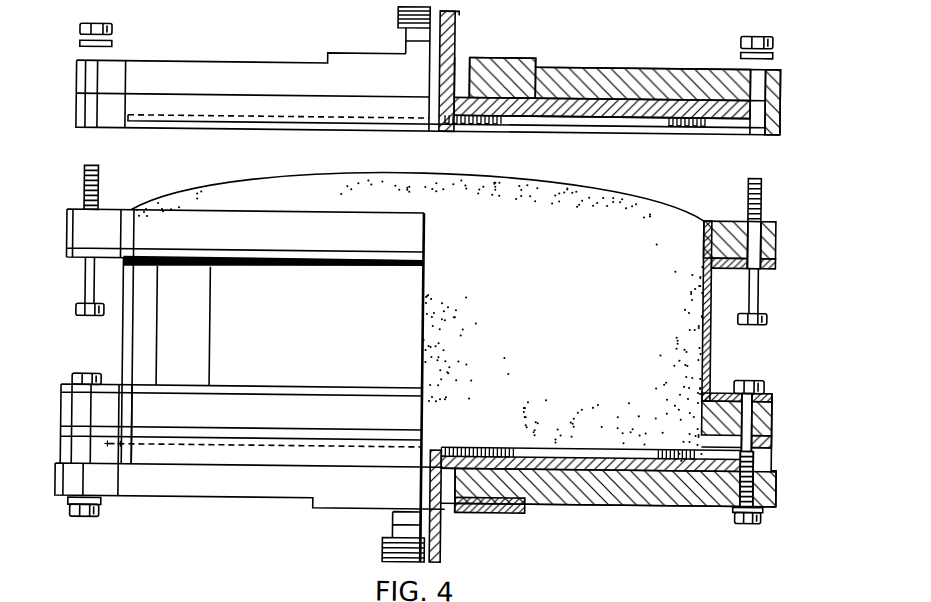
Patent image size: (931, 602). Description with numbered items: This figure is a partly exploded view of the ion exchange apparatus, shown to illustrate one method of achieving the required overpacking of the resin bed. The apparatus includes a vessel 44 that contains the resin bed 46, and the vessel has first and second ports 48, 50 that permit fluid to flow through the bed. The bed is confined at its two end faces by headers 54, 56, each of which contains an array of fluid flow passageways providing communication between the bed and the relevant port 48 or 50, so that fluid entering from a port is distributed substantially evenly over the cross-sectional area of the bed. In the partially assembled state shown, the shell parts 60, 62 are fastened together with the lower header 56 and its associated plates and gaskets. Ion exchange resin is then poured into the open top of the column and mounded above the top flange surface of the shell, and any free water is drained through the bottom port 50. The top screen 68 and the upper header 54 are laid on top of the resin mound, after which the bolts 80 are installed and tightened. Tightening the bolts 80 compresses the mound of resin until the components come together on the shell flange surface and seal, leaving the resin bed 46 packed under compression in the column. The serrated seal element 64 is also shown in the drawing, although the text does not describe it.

The vessel 44 is at (118, 335).
The resin bed 46 is at (530, 172).
The first port 48 is at (456, 11).
The second port 50 is at (448, 545).
The header 54 is at (775, 113).
The header 56 is at (777, 456).
The shell 60 is at (66, 228).
The shell 62 is at (62, 400).
The serrated seal 64 is at (694, 112).
The top screen 68 is at (640, 119).
The bolts 80 is at (98, 185).